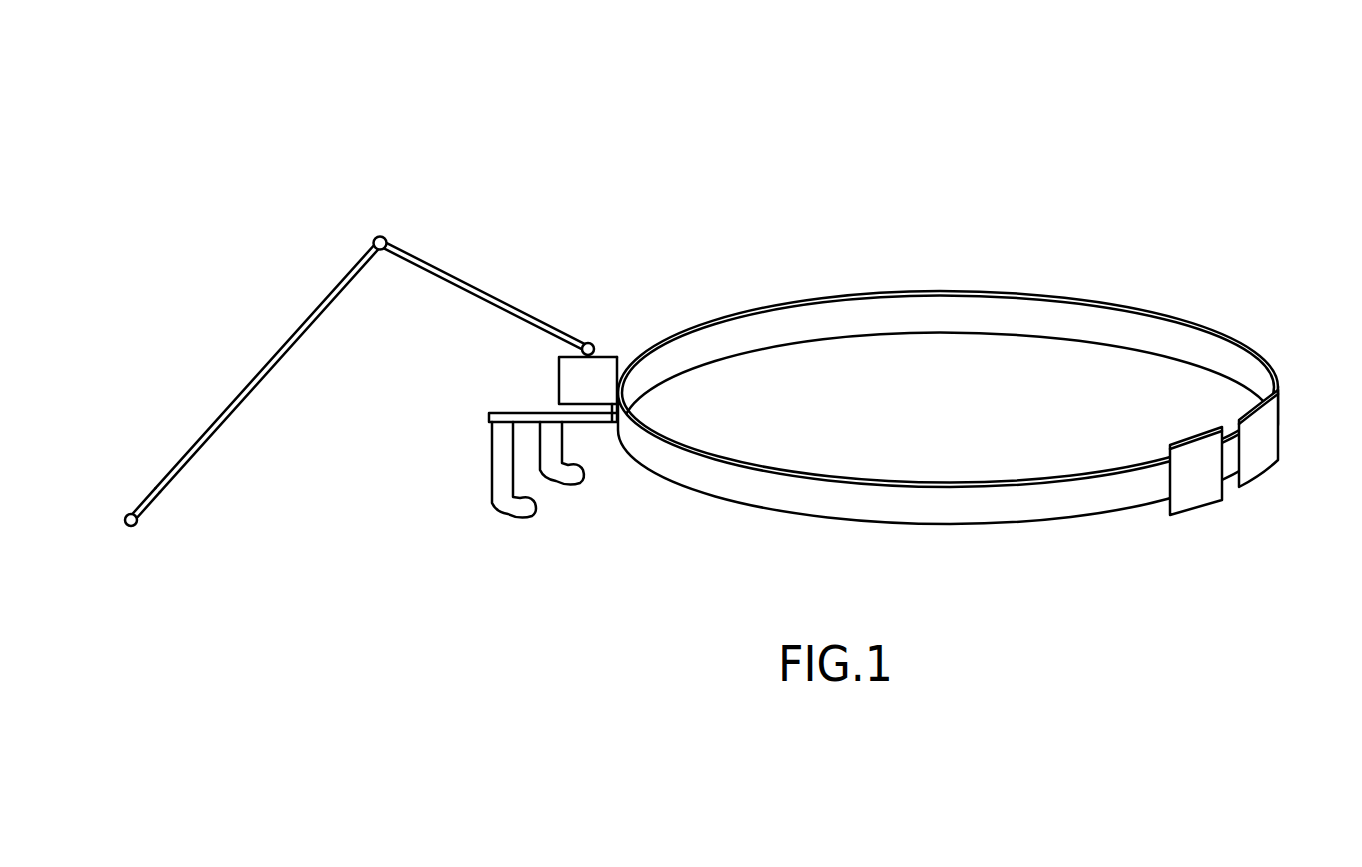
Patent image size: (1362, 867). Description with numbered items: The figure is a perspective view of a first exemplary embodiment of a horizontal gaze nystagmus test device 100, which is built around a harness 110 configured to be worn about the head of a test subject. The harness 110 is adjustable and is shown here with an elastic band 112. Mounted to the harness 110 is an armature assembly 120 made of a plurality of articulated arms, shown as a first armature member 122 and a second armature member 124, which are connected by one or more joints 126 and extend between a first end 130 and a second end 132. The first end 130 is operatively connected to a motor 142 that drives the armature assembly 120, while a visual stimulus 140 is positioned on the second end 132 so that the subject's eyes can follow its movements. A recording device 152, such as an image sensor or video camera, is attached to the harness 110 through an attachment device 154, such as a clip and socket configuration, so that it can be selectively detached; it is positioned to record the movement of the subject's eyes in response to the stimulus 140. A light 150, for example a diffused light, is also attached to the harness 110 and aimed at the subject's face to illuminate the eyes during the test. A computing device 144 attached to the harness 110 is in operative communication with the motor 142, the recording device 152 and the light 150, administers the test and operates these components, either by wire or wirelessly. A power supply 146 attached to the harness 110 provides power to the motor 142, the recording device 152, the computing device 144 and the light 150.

The HGN test device 100 is at (707, 320).
The harness 110 is at (957, 385).
The elastic band 112 is at (1247, 358).
The armature assembly 120 is at (343, 354).
The first armature member 122 is at (498, 298).
The second armature member 124 is at (287, 340).
The joint 126 is at (380, 236).
The first end 130 is at (617, 321).
The second end 132 is at (128, 512).
The visual stimulus 140 is at (141, 513).
The motor 142 is at (623, 346).
The computing device 144 is at (1204, 505).
The power supply 146 is at (1262, 462).
The light 150 is at (570, 488).
The recording device 152 is at (500, 518).
The attachment device 154 is at (615, 426).